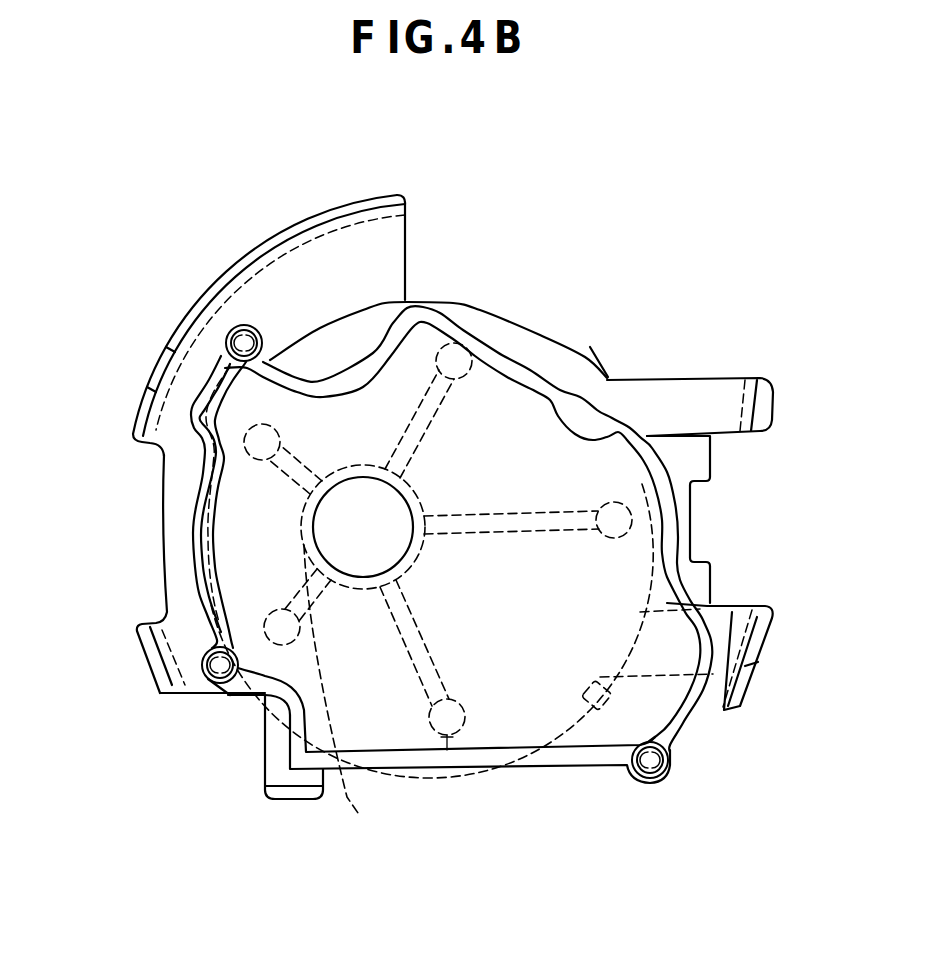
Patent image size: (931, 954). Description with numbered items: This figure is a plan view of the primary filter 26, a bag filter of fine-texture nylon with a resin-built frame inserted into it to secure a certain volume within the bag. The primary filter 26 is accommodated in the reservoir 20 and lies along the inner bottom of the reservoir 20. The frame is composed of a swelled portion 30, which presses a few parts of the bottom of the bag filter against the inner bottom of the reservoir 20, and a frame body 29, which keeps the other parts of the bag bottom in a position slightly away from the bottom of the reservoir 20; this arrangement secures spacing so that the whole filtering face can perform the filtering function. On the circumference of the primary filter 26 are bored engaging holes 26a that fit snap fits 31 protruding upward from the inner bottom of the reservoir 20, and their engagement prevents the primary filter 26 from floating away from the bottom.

The reservoir 20 is at (333, 208).
The primary filter 26 is at (510, 403).
The engaging holes 26a is at (250, 327).
The frame body 29 is at (442, 318).
The swelled portion 30 is at (472, 362).
The snap fits 31 is at (227, 343).